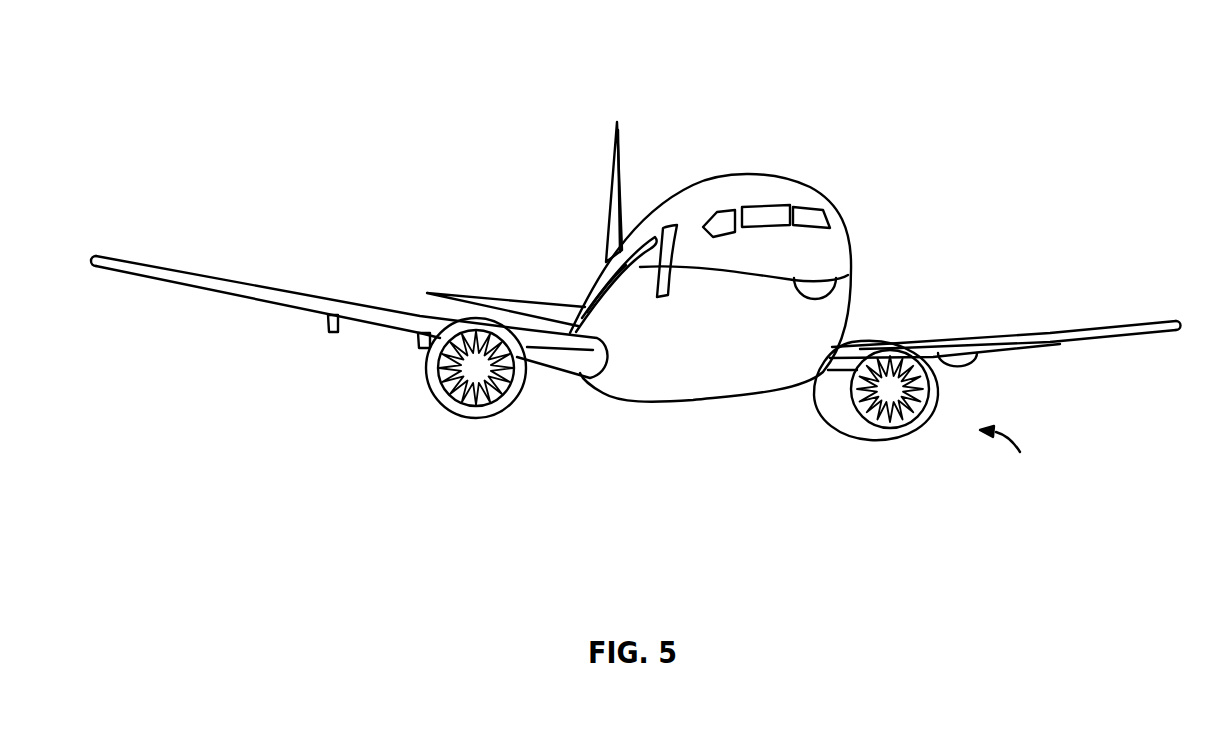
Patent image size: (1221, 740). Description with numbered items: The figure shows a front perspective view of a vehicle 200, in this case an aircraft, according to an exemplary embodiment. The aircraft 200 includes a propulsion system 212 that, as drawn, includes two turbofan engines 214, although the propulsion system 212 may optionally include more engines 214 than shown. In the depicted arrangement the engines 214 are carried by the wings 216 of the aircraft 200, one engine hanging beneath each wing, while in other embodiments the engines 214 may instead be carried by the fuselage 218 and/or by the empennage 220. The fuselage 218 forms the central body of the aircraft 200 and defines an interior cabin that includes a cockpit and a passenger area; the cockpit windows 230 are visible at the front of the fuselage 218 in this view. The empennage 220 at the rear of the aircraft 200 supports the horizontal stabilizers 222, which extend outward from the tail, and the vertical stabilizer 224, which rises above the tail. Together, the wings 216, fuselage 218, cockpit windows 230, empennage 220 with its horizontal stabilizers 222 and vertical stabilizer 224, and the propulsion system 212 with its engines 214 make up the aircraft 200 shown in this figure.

The vehicle 200 is at (364, 63).
The propulsion system 212 is at (1009, 461).
The turbofan engines 214 is at (472, 418).
The wings 216 is at (237, 285).
The fuselage 218 is at (850, 243).
The empennage 220 is at (602, 278).
The horizontal stabilizers 222 is at (470, 290).
The vertical stabilizer 224 is at (610, 165).
The cockpit window 230 is at (770, 210).